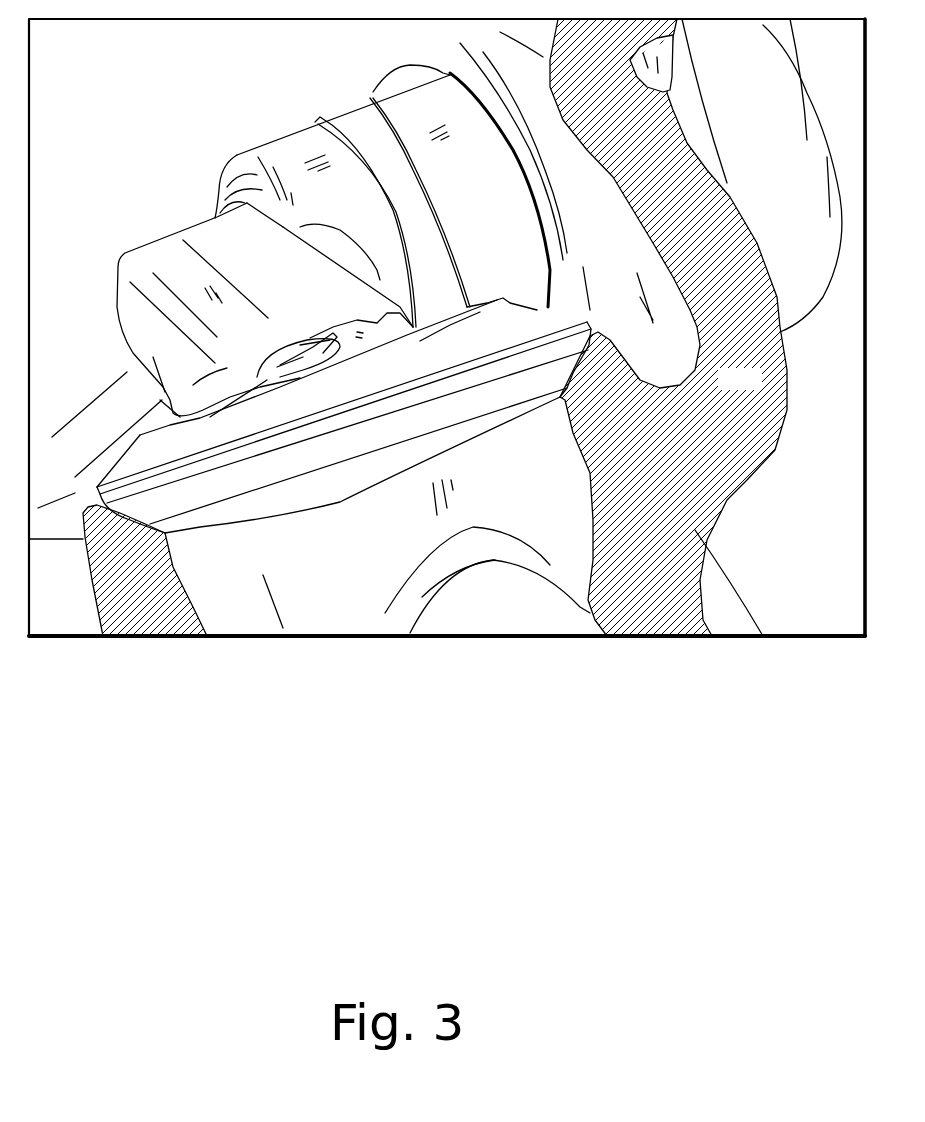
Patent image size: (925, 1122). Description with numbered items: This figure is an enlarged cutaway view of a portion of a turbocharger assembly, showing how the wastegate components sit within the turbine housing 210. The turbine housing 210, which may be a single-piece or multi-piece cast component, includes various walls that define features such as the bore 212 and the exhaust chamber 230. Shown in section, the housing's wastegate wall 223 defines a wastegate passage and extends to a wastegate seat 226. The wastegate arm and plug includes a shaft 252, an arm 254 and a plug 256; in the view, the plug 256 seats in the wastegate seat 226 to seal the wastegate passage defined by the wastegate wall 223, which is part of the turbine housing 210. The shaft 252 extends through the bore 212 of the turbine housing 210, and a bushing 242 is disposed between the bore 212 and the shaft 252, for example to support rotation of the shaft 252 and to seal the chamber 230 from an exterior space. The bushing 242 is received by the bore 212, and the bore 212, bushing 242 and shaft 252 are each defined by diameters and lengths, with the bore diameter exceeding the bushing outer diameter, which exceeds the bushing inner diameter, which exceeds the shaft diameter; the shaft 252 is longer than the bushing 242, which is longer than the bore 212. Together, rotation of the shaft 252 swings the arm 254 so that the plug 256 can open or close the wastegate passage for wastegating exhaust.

The turbine housing 210 is at (758, 390).
The bore 212 is at (450, 73).
The wastegate wall 223 is at (422, 528).
The wastegate seat 226 is at (538, 400).
The exhaust chamber 230 is at (129, 200).
The bushing 242 is at (506, 205).
The shaft 252 is at (363, 215).
The arm 254 is at (311, 283).
The plug 256 is at (307, 455).